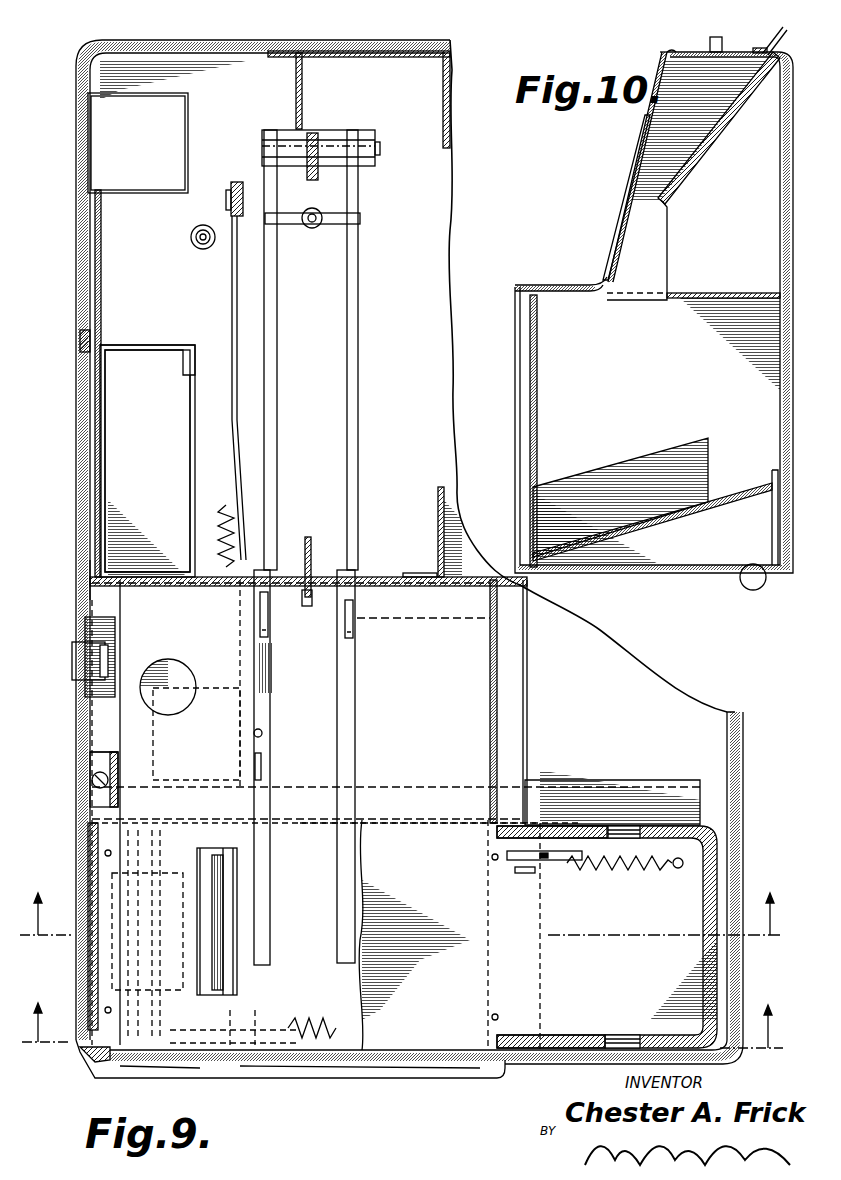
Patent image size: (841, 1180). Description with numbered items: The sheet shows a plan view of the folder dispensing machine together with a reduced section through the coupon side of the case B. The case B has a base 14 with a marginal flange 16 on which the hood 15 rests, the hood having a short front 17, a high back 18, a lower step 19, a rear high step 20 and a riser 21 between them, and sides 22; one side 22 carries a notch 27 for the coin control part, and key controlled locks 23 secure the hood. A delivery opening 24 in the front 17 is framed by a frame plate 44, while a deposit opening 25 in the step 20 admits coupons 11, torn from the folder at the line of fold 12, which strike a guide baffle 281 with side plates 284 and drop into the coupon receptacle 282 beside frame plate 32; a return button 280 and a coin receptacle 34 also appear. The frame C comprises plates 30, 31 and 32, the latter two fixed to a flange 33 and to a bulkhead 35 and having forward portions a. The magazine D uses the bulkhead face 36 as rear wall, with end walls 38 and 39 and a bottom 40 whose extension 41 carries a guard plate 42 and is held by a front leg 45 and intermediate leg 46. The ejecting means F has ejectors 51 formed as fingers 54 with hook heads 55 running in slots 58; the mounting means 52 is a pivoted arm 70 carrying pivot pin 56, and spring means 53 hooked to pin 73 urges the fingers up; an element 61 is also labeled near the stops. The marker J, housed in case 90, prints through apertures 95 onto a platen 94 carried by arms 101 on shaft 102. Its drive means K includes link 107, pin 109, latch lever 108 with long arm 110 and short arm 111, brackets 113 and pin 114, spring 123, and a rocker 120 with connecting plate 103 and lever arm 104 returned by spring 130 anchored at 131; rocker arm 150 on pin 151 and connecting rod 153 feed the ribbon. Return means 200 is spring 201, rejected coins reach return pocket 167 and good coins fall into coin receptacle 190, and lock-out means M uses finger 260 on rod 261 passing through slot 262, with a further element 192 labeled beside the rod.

In FIG. 9, the coupon leaf 11 is at (403, 1016).
In FIG. 10, the coupon leaf 11 is at (695, 440).
In FIG. 9, the line of fold 12 is at (402, 904).
In FIG. 9, the base 14 is at (432, 354).
In FIG. 10, the base 14 is at (670, 573).
In FIG. 9, the hood 15 is at (84, 526).
In FIG. 10, the hood 15 is at (650, 100).
In FIG. 9, the marginal flange 16 is at (90, 757).
In FIG. 10, the marginal flange 16 is at (765, 586).
In FIG. 9, the front 17 is at (556, 1064).
In FIG. 9, the back 18 is at (344, 42).
In FIG. 10, the back 18 is at (790, 199).
In FIG. 10, the forward lower step 19 is at (565, 286).
In FIG. 10, the rear high step 20 is at (692, 53).
In FIG. 10, the riser 21 is at (628, 190).
In FIG. 9, the side 22 is at (78, 470).
In FIG. 9, the key controlled lock 23 is at (78, 680).
In FIG. 9, the delivery opening 24 is at (486, 1078).
In FIG. 10, the return or deposit opening 25 is at (764, 46).
In FIG. 9, the notch 27 is at (90, 330).
In FIG. 9, the frame plate 30 is at (102, 238).
In FIG. 9, the frame plate 31 is at (303, 92).
In FIG. 9, the frame plate 32 is at (452, 118).
In FIG. 9, the upstanding flange 33 is at (405, 57).
In FIG. 10, the coupon receptacle 34 is at (716, 293).
In FIG. 9, the bulkhead 35 is at (380, 577).
In FIG. 9, the forward face of bulkhead 36 is at (190, 586).
In FIG. 9, the end wall 38 is at (92, 778).
In FIG. 9, the end wall 39 is at (490, 688).
In FIG. 9, the bottom 40 is at (396, 701).
In FIG. 9, the forward extension 41 is at (297, 1053).
In FIG. 9, the guard plate 42 is at (425, 1055).
In FIG. 9, the frame plate 44 is at (210, 1072).
In FIG. 9, the front leg 45 is at (520, 1040).
In FIG. 9, the intermediate leg 46 is at (555, 826).
In FIG. 9, the ejector 51 is at (278, 430).
In FIG. 9, the mounting means 52 is at (320, 180).
In FIG. 9, the urging means 53 is at (314, 230).
In FIG. 9, the finger 54 is at (360, 336).
In FIG. 9, the hook head 55 is at (258, 632).
In FIG. 9, the pivot pin 56 is at (382, 148).
In FIG. 9, the slot 58 is at (270, 708).
In FIG. 9, the stop 61 is at (258, 598).
In FIG. 9, the pivoted arm 70 is at (318, 142).
In FIG. 9, the pin 73 is at (292, 216).
In FIG. 9, the case 90 is at (720, 852).
In FIG. 9, the platen 94 is at (236, 910).
In FIG. 9, the aperture 95 is at (200, 902).
In FIG. 9, the arm 101 is at (176, 960).
In FIG. 9, the pivot shaft 102 is at (160, 843).
In FIG. 9, the connecting plate 103 is at (88, 866).
In FIG. 9, the lever arm 104 is at (240, 1018).
In FIG. 9, the link 107 is at (240, 180).
In FIG. 9, the latch lever 108 is at (242, 380).
In FIG. 9, the pivot pin 109 is at (226, 198).
In FIG. 9, the long arm 110 is at (230, 372).
In FIG. 9, the short arm 111 is at (245, 972).
In FIG. 9, the bracket 113 is at (254, 733).
In FIG. 9, the pivot pin 114 is at (262, 757).
In FIG. 9, the rocker 120 is at (112, 940).
In FIG. 9, the spring 123 is at (222, 516).
In FIG. 9, the helical tension spring 130 is at (305, 1018).
In FIG. 9, the anchor 131 is at (336, 1031).
In FIG. 9, the rocker arm 150 is at (550, 858).
In FIG. 9, the pivot pin 151 is at (530, 875).
In FIG. 9, the connecting rod 153 is at (548, 866).
In FIG. 9, the return pocket 167 is at (148, 98).
In FIG. 9, the coin receptacle 190 is at (147, 461).
In FIG. 9, the rod end 192 is at (234, 296).
In FIG. 9, the return means 200 is at (196, 246).
In FIG. 9, the helical tension spring 201 is at (194, 228).
In FIG. 9, the finger 260 is at (312, 603).
In FIG. 9, the shiftable rod 261 is at (310, 538).
In FIG. 9, the slot 262 is at (300, 616).
In FIG. 10, the return button 280 is at (712, 42).
In FIG. 10, the guide baffle 281 is at (700, 160).
In FIG. 10, the coupon receptacle 282 is at (540, 400).
In FIG. 10, the side plate 284 is at (650, 244).
In FIG. 9, the case B is at (745, 736).
In FIG. 10, the case B is at (640, 134).
In FIG. 9, the frame C is at (448, 486).
In FIG. 9, the magazine D is at (470, 718).
In FIG. 9, the ejecting means F is at (360, 292).
In FIG. 9, the marker J is at (718, 992).
In FIG. 9, the drive means K is at (232, 320).
In FIG. 9, the lock-out means M is at (305, 540).
In FIG. 9, the forwardly projecting portion a is at (438, 502).